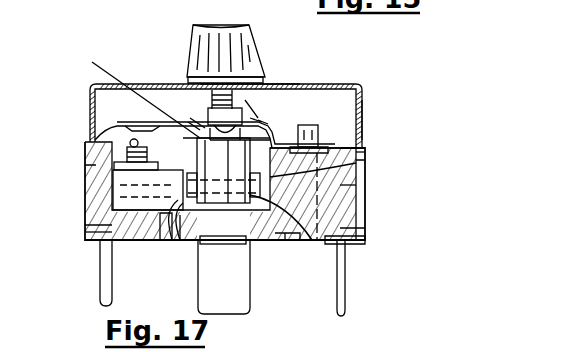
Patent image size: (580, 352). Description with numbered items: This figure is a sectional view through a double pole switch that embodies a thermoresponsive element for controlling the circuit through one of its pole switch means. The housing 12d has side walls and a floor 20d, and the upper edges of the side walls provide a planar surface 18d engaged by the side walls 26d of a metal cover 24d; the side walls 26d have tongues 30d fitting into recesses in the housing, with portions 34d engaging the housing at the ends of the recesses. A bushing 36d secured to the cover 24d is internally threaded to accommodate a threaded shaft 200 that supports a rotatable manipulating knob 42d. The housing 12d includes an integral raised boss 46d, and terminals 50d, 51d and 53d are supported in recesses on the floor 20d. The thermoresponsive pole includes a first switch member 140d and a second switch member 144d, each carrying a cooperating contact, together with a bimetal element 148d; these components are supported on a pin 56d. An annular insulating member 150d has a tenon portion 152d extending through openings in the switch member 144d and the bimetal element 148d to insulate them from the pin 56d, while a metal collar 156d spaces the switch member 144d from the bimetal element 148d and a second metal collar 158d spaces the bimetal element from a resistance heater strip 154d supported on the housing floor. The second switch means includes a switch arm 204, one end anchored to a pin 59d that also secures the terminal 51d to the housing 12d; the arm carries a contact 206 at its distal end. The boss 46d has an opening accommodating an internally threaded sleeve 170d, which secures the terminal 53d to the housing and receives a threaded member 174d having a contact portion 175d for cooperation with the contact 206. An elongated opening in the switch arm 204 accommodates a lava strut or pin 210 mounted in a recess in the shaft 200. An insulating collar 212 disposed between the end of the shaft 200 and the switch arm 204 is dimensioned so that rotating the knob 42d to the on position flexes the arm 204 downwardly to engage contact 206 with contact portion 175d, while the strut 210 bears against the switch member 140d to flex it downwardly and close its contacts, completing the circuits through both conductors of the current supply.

The housing 12d is at (365, 205).
The planar surface 18d is at (362, 112).
The floor 20d is at (125, 273).
The metal cover 24d is at (326, 84).
The side walls of the cover 26d is at (90, 92).
The tongues 30d is at (85, 167).
The portions 34d is at (85, 224).
The bushing 36d is at (228, 46).
The manipulating knob 42d is at (190, 40).
The boss 46d is at (168, 240).
The terminal 50d is at (244, 316).
The terminal 51d is at (345, 256).
The terminal 53d is at (100, 248).
The pin 56d is at (197, 156).
The pin 59d is at (366, 152).
The first switch member 140d is at (192, 118).
The second switch member 144d is at (121, 89).
The bimetal element 148d is at (245, 246).
The annular insulating member 150d is at (300, 120).
The tenon portion 152d is at (113, 186).
The resistance heater strip 154d is at (182, 243).
The metal collar 156d is at (356, 184).
The metal collar 158d is at (332, 238).
The internally threaded sleeve 170d is at (112, 205).
The threaded member 174d is at (114, 150).
The contact portion 175d is at (95, 127).
The threaded shaft 200 is at (242, 112).
The switch arm 204 is at (188, 122).
The contact 206 is at (95, 110).
The lava strut or pin 210 is at (262, 114).
The insulating collar 212 is at (248, 117).